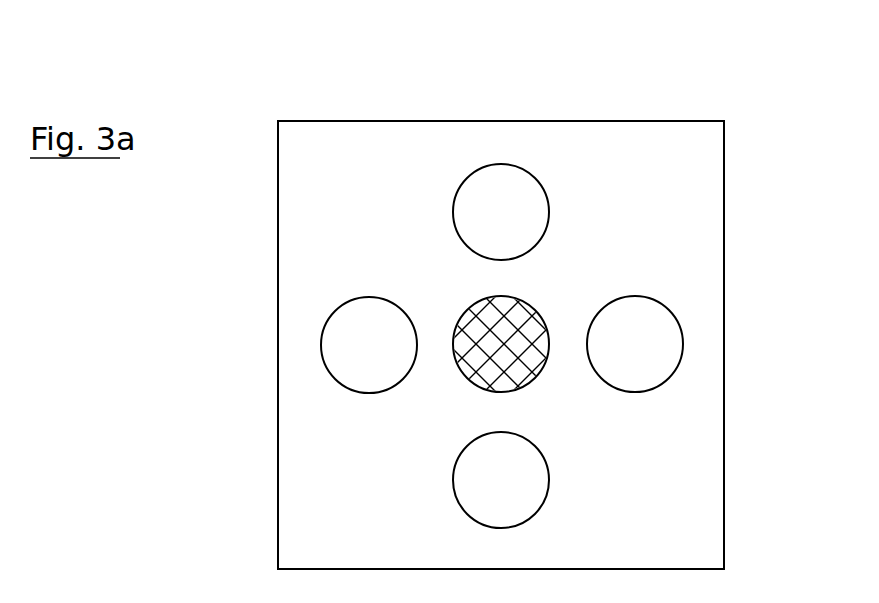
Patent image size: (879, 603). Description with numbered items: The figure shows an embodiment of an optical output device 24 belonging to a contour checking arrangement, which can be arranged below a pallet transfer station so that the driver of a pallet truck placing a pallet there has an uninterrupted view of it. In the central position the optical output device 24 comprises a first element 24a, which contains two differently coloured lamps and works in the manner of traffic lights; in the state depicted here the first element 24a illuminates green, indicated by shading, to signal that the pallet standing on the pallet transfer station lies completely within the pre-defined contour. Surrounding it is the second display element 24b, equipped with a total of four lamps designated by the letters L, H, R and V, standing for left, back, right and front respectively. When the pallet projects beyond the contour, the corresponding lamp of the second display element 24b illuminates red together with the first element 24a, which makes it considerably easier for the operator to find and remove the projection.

The optical output device 24 is at (754, 228).
The first element 24a is at (531, 376).
The second display element 24b is at (475, 218).